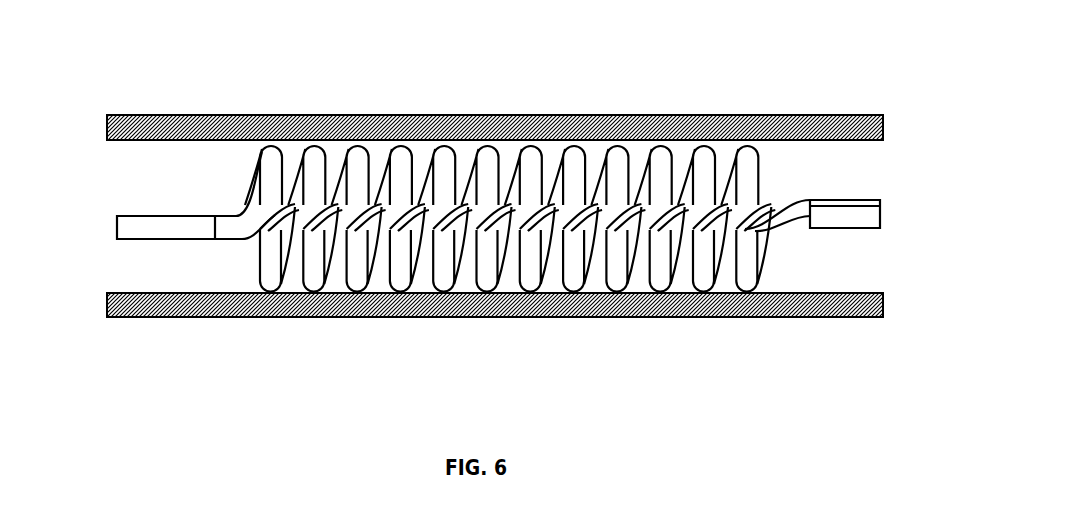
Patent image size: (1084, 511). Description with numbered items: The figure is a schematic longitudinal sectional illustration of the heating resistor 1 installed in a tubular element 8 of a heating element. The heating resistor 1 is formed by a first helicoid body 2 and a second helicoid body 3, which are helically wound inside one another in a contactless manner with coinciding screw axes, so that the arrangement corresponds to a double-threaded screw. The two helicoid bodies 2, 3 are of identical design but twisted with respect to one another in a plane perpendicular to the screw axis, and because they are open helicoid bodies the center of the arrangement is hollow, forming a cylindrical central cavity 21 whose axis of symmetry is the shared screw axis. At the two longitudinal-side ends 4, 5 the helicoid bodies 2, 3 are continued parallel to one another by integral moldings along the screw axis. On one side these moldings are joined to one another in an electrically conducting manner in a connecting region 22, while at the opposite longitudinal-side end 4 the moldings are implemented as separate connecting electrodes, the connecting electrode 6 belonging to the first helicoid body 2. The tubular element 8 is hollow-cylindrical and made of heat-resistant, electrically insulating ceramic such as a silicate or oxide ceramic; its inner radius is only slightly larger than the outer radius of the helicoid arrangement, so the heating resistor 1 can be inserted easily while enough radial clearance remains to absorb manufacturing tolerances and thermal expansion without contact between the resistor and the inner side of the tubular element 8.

The heating resistor 1 is at (218, 181).
The first helicoid body 2 is at (402, 152).
The second helicoid body 3 is at (358, 275).
The longitudinal-side end 4 is at (164, 266).
The longitudinal-side end 5 is at (850, 178).
The connecting electrode 6 is at (140, 228).
The tubular element 8 is at (486, 100).
The central cavity 21 is at (266, 221).
The connecting region 22 is at (845, 218).